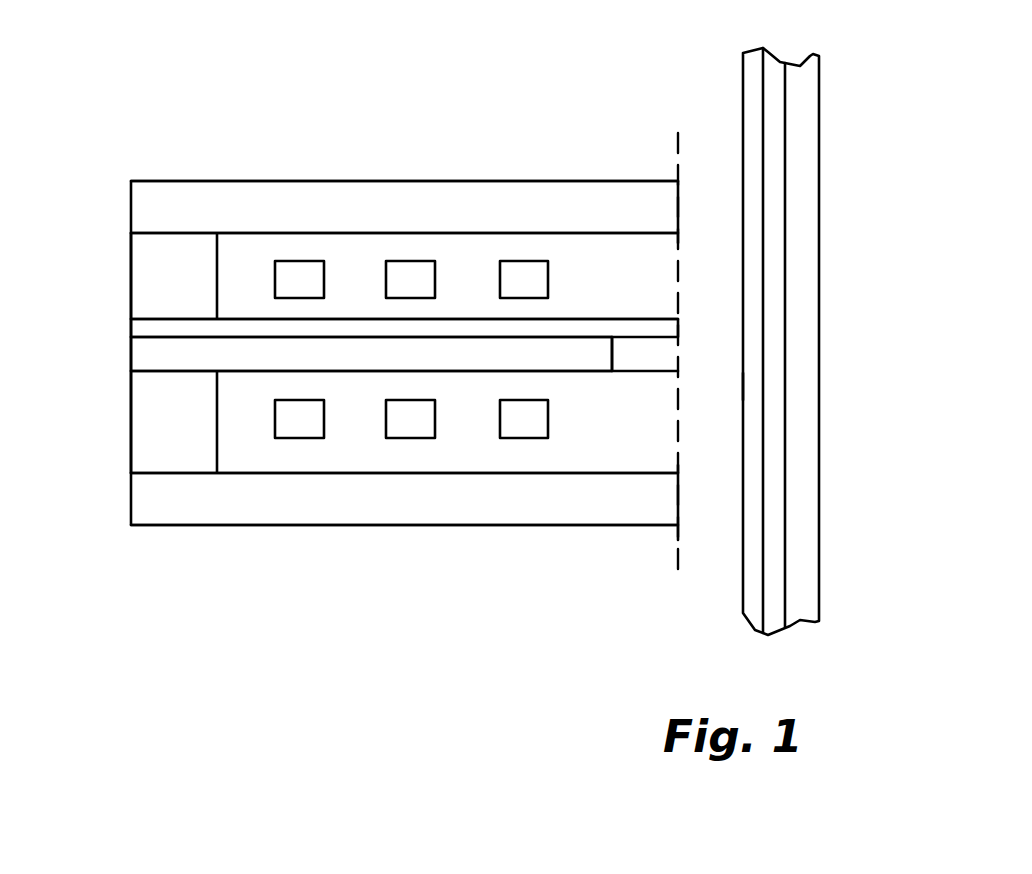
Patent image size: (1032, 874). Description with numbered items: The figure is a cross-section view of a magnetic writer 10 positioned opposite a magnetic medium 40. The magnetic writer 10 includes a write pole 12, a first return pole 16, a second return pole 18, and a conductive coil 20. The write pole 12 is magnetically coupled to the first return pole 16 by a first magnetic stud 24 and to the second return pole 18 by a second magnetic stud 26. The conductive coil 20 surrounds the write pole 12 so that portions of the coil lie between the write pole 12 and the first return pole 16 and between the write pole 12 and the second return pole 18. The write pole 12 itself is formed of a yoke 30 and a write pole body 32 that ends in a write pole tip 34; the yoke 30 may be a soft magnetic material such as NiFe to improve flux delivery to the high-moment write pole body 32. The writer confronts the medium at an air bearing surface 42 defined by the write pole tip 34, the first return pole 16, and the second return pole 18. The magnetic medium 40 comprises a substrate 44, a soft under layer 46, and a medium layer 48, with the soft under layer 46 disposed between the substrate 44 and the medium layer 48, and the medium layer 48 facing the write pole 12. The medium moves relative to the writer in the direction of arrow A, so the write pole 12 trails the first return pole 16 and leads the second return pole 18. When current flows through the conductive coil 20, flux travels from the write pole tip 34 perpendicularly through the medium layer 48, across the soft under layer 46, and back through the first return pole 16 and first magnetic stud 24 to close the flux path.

The magnetic writer 10 is at (236, 142).
The write pole 12 is at (110, 344).
The first return pole 16 is at (156, 502).
The second return pole 18 is at (142, 192).
The conductive coil 20 is at (558, 266).
The first magnetic stud 24 is at (142, 435).
The second magnetic stud 26 is at (142, 254).
The yoke 30 is at (142, 352).
The write pole body 32 is at (136, 327).
The write pole tip 34 is at (655, 330).
The magnetic medium 40 is at (845, 147).
The air bearing surface 42 is at (675, 144).
The substrate 44 is at (804, 211).
The soft under layer 46 is at (769, 273).
The medium layer 48 is at (754, 373).
The arrow A is at (853, 496).